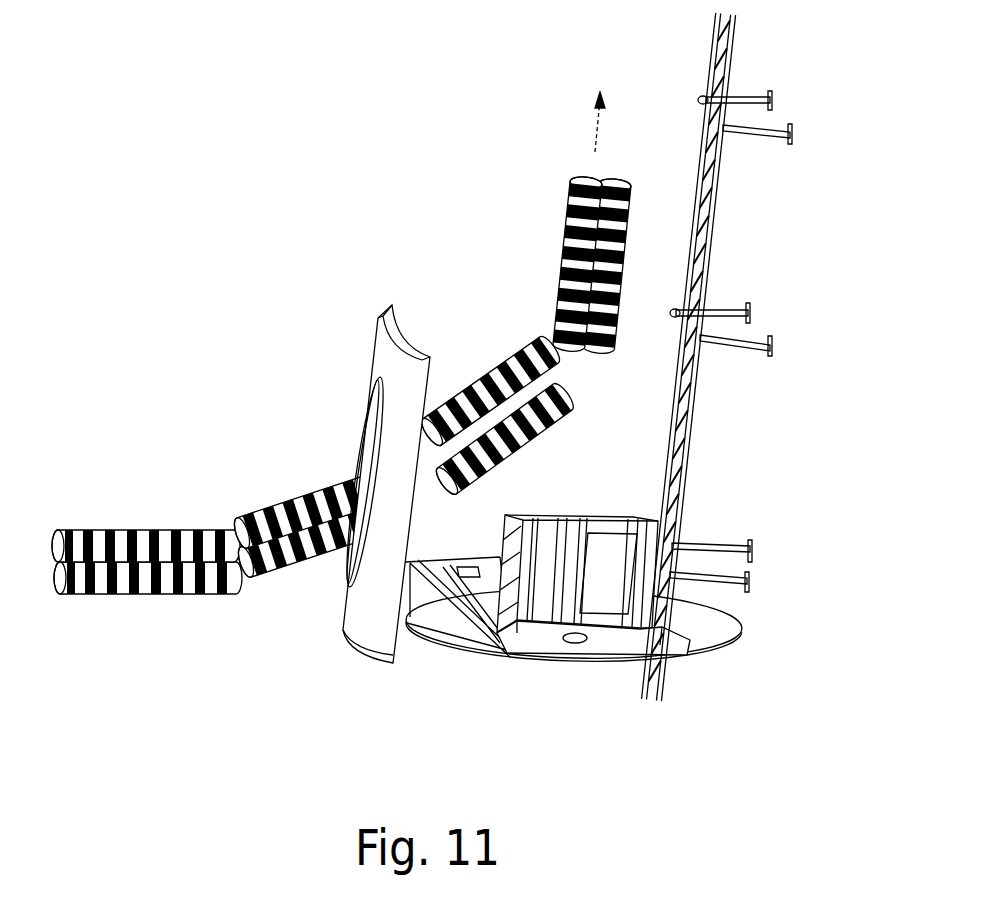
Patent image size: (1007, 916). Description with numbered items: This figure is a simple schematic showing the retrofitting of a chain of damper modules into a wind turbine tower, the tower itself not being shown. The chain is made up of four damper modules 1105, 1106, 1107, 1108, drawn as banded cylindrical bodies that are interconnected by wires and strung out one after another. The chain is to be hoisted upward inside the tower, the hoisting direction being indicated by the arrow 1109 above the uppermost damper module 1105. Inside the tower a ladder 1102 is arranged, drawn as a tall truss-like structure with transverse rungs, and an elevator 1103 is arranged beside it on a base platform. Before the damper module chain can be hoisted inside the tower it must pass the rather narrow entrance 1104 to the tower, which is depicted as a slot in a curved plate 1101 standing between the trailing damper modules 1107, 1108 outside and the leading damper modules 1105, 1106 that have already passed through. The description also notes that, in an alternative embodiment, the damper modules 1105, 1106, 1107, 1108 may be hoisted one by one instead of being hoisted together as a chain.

The curved plate 1101 is at (377, 637).
The ladder 1102 is at (710, 248).
The elevator 1103 is at (543, 610).
The entrance 1104 is at (377, 435).
The damper module 1105 is at (565, 240).
The damper module 1106 is at (517, 456).
The damper module 1107 is at (312, 582).
The damper module 1108 is at (160, 530).
The arrow 1109 is at (587, 128).